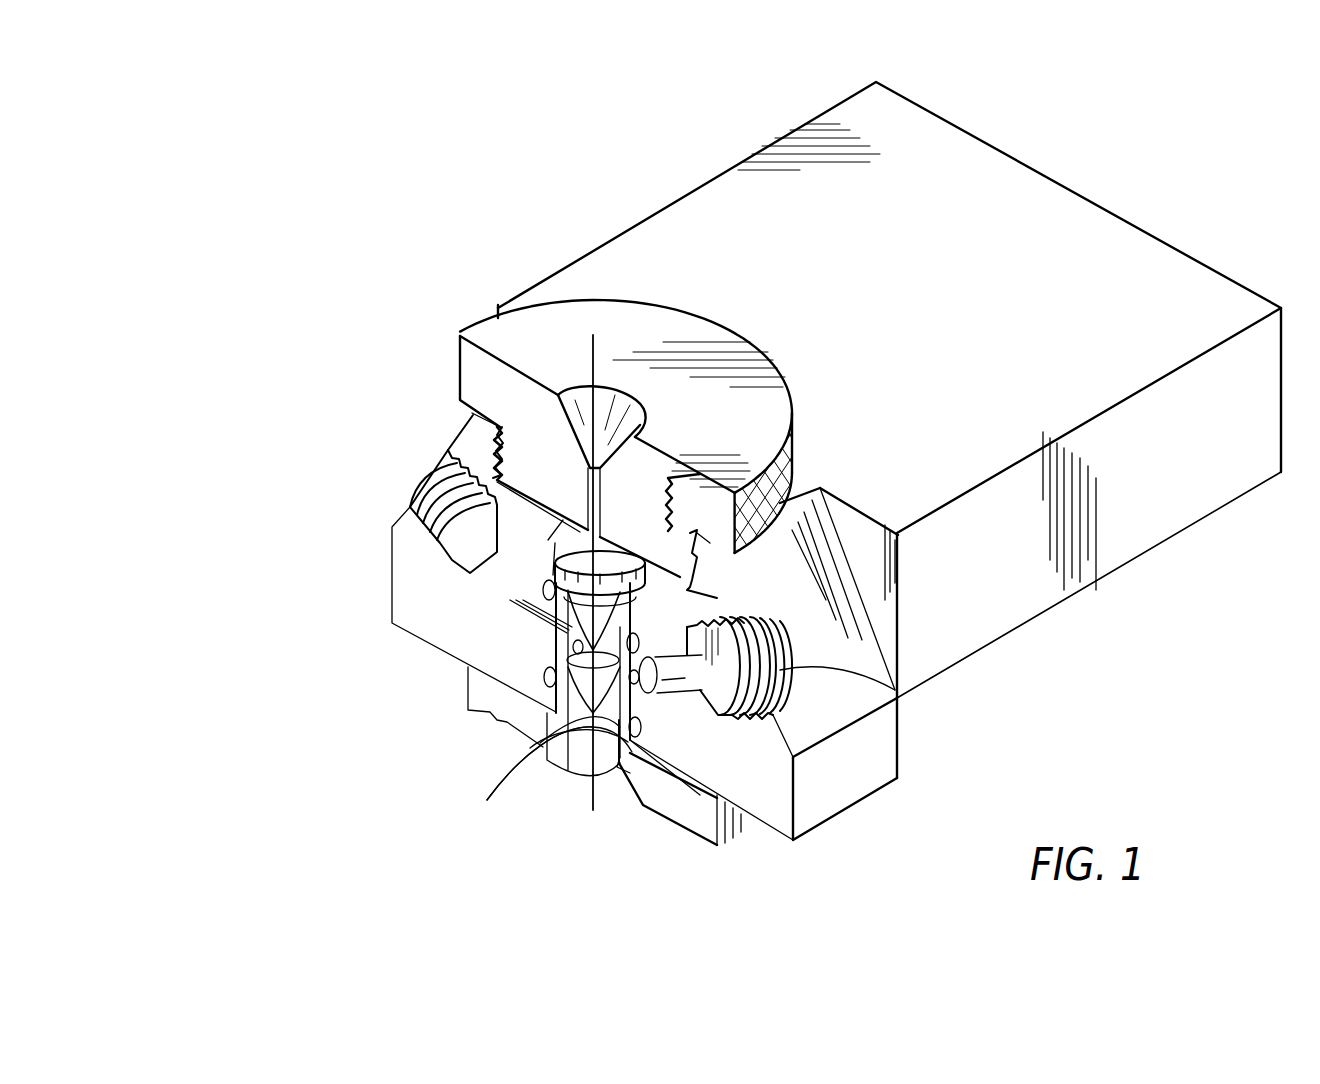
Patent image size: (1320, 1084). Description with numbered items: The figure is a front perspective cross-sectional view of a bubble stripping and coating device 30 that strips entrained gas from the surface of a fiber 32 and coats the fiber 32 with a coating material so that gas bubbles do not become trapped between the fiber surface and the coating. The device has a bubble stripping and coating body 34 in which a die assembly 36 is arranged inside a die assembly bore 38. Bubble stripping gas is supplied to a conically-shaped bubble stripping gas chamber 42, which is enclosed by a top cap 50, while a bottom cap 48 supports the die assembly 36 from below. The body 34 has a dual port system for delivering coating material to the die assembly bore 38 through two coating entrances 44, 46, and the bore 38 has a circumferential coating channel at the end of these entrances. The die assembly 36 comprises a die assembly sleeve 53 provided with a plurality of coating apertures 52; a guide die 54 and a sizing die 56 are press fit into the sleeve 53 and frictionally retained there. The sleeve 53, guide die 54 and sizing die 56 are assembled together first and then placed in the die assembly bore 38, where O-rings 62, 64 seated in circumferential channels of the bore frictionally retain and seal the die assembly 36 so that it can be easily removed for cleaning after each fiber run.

The bubble stripping and coating device 30 is at (1283, 222).
The fiber 32 is at (593, 350).
The bubble stripping and coating body 34 is at (753, 190).
The die assembly 36 is at (548, 660).
The die assembly bore 38 is at (617, 577).
The bubble stripping gas chamber 42 is at (553, 544).
The coating entrance 44 is at (897, 692).
The coating entrance 46 is at (445, 482).
The bottom cap 48 is at (655, 803).
The top cap 50 is at (458, 352).
The coating apertures 52 is at (553, 700).
The die assembly sleeve 53 is at (700, 797).
The guide die 54 is at (557, 623).
The sizing die 56 is at (603, 740).
The O-ring 62 is at (634, 716).
The O-ring 64 is at (630, 647).